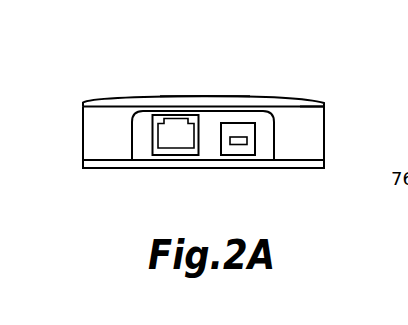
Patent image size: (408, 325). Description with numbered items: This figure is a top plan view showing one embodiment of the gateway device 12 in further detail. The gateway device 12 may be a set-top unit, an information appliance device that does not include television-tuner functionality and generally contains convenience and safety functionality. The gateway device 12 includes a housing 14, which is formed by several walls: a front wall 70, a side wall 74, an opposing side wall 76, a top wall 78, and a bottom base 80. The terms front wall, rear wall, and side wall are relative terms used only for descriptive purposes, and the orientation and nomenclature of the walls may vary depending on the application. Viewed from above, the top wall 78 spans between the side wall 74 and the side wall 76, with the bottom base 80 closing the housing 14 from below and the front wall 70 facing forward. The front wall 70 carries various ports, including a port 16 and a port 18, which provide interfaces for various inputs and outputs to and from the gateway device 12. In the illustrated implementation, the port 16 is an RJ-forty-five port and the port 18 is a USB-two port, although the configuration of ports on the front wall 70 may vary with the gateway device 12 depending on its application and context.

The device 12 is at (205, 122).
The housing cover 14 is at (97, 101).
The Ethernet port 16 is at (173, 150).
The USB port 18 is at (237, 150).
The housing body 70 is at (312, 148).
The top edge 74 is at (326, 119).
The side wall 76 is at (82, 134).
The top surface 78 is at (206, 96).
The base 80 is at (102, 170).